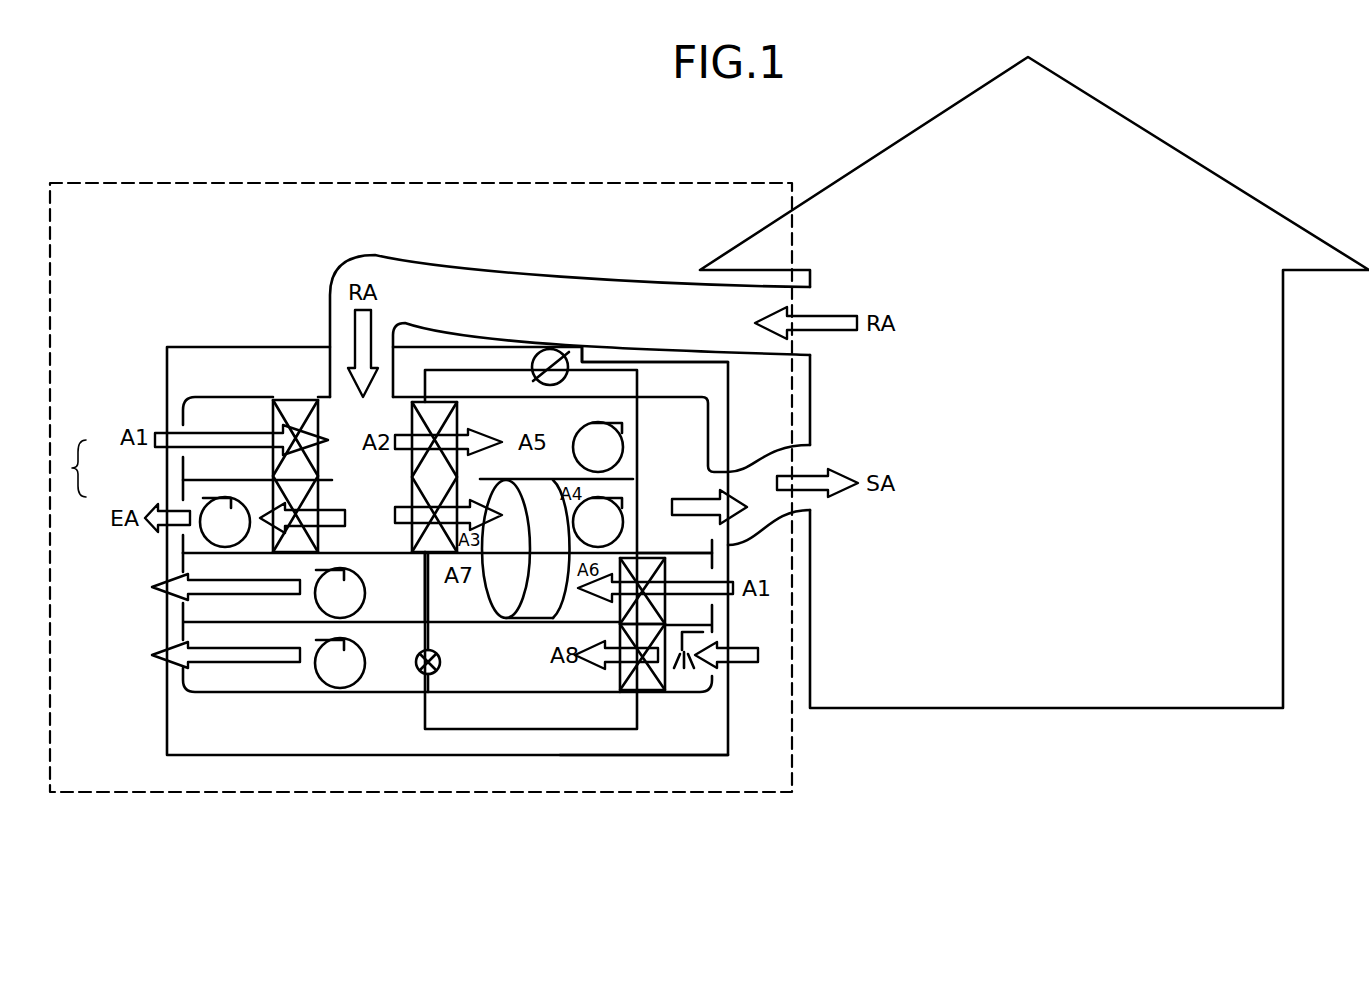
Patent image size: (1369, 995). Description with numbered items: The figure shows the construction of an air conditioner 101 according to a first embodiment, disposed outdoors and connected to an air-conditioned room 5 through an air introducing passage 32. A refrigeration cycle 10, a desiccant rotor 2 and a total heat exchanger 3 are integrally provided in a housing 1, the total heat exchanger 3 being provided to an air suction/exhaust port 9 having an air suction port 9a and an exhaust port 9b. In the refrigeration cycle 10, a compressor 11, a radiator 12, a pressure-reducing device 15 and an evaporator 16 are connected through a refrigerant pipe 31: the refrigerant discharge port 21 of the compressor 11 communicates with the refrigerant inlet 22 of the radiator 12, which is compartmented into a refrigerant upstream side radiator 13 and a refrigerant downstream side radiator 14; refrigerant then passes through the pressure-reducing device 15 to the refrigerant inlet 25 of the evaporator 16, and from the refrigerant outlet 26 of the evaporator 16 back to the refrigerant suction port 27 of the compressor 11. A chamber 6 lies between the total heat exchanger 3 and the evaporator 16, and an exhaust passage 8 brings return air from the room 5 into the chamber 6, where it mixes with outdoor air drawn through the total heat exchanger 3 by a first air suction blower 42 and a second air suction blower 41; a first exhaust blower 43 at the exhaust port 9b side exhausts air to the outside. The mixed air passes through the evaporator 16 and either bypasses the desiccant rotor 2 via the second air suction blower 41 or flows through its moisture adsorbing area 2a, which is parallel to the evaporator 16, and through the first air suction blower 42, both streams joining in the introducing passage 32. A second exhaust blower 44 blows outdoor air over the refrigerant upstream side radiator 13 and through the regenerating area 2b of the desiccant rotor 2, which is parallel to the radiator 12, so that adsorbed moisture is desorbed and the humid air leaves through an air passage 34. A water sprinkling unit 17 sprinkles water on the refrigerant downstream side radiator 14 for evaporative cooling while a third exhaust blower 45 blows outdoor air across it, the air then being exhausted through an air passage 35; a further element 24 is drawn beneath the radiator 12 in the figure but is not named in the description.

The housing 1 is at (250, 757).
The desiccant rotor 2 is at (541, 512).
The moisture adsorbing area 2a is at (544, 478).
The regenerating area 2b is at (557, 589).
The total heat exchanger 3 is at (292, 398).
The air-conditioned room 5 is at (1062, 398).
The chamber 6 is at (386, 496).
The exhaust passage 8 is at (502, 288).
The air suction/exhaust port 9 is at (69, 468).
The air suction port 9a is at (183, 452).
The exhaust port 9b is at (180, 498).
The refrigeration cycle 10 is at (592, 757).
The compressor 11 is at (560, 348).
The radiator 12 is at (567, 624).
The refrigerant upstream side radiator 13 is at (620, 605).
The refrigerant downstream side radiator 14 is at (622, 678).
The pressure-reducing device 15 is at (437, 651).
The evaporator 16 is at (453, 425).
The water sprinkling unit 17 is at (705, 632).
The refrigerant discharge port 21 is at (580, 362).
The refrigerant inlet 22 is at (645, 552).
The bottom partition 24 is at (645, 692).
The refrigerant inlet 25 is at (424, 557).
The refrigerant outlet 26 is at (427, 397).
The refrigerant suction port 27 is at (540, 351).
The refrigerant pipe 31 is at (639, 380).
The air introducing passage 32 is at (744, 462).
The air passage 34 is at (210, 610).
The air passage 35 is at (205, 685).
The second air suction blower 41 is at (614, 449).
The first air suction blower 42 is at (614, 516).
The first exhaust blower 43 is at (215, 528).
The second exhaust blower 44 is at (345, 588).
The third exhaust blower 45 is at (350, 654).
The air conditioner 101 is at (514, 182).